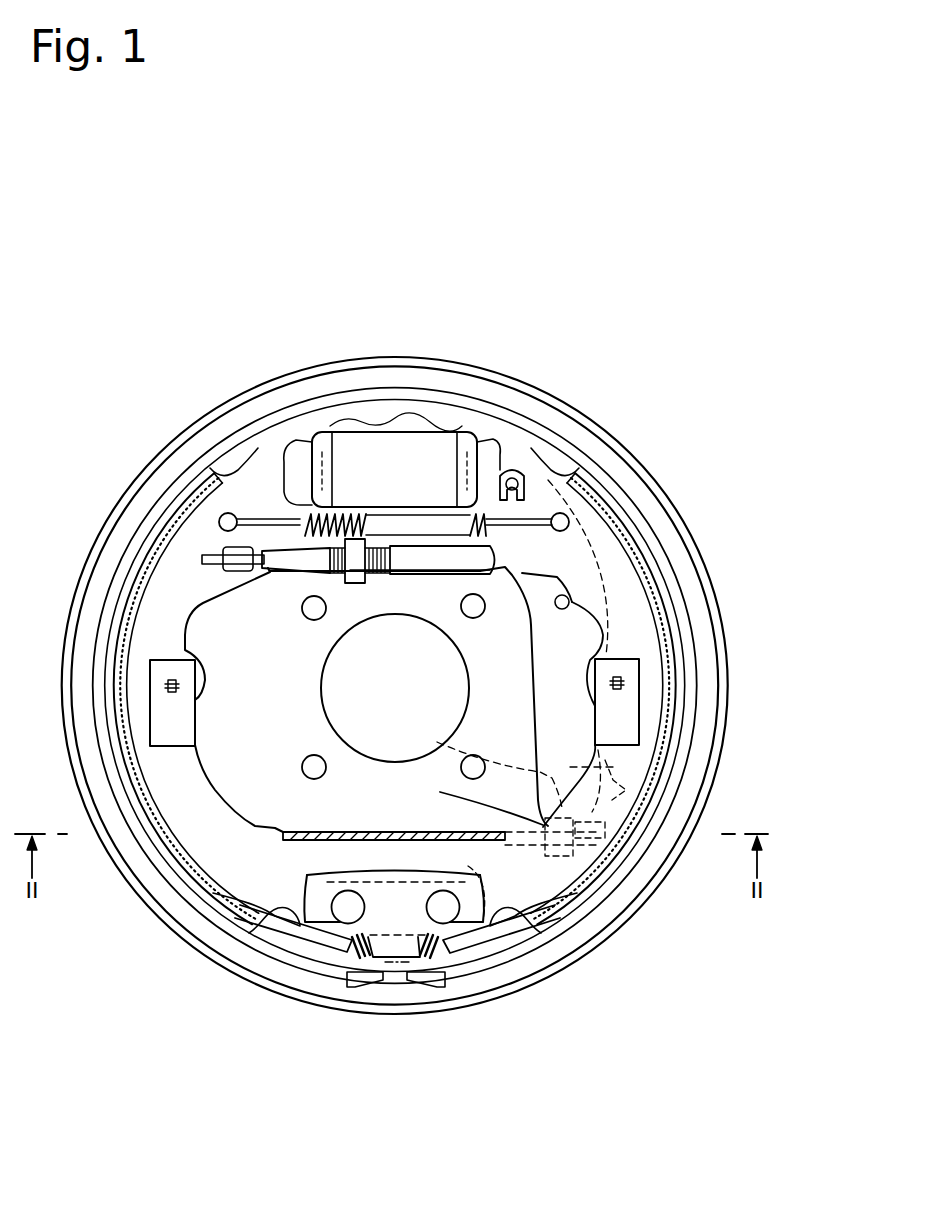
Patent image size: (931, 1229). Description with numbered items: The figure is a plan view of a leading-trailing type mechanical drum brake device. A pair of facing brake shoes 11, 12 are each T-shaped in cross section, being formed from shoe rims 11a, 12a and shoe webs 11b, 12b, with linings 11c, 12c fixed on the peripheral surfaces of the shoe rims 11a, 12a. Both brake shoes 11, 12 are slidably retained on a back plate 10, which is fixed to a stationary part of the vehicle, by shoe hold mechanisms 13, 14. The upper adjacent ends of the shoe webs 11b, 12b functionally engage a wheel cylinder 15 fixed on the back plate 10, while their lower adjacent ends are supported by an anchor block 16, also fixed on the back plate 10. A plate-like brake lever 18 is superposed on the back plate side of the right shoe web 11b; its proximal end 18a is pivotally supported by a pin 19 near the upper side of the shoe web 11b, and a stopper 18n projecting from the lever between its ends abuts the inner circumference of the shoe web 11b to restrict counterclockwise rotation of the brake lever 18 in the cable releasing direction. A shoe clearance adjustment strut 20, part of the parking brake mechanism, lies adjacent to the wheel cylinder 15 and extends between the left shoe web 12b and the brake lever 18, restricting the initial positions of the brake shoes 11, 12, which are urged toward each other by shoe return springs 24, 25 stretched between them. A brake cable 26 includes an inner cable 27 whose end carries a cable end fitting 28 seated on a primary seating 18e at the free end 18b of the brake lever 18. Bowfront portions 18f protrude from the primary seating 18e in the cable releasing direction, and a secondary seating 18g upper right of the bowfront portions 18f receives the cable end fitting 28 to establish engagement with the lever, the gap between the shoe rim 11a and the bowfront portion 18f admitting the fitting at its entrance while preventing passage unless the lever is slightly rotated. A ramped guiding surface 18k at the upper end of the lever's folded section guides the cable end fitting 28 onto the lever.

The back plate 10 is at (450, 358).
The brake shoe 11 is at (630, 653).
The shoe rim 11a is at (652, 588).
The shoe web 11b is at (672, 602).
The lining 11c is at (638, 617).
The brake shoe 12 is at (173, 701).
The shoe rim 12a is at (213, 862).
The shoe web 12b is at (178, 890).
The lining 12c is at (172, 858).
The shoe hold mechanism 13 is at (641, 705).
The shoe hold mechanism 14 is at (149, 705).
The wheel cylinder 15 is at (392, 460).
The anchor block 16 is at (330, 866).
The brake lever 18 is at (572, 672).
The proximal end 18a is at (512, 478).
The free end 18b is at (447, 758).
The primary seating 18e is at (590, 865).
The bowfront portion 18f is at (640, 792).
The secondary seating 18g is at (612, 770).
The guiding surface 18k is at (456, 744).
The stopper 18n is at (572, 600).
The pin 19 is at (514, 478).
The shoe clearance adjustment strut 20 is at (398, 580).
The shoe return spring 24 is at (305, 515).
The shoe return spring 25 is at (350, 958).
The brake cable 26 is at (332, 818).
The inner cable 27 is at (395, 841).
The cable end fitting 28 is at (615, 872).